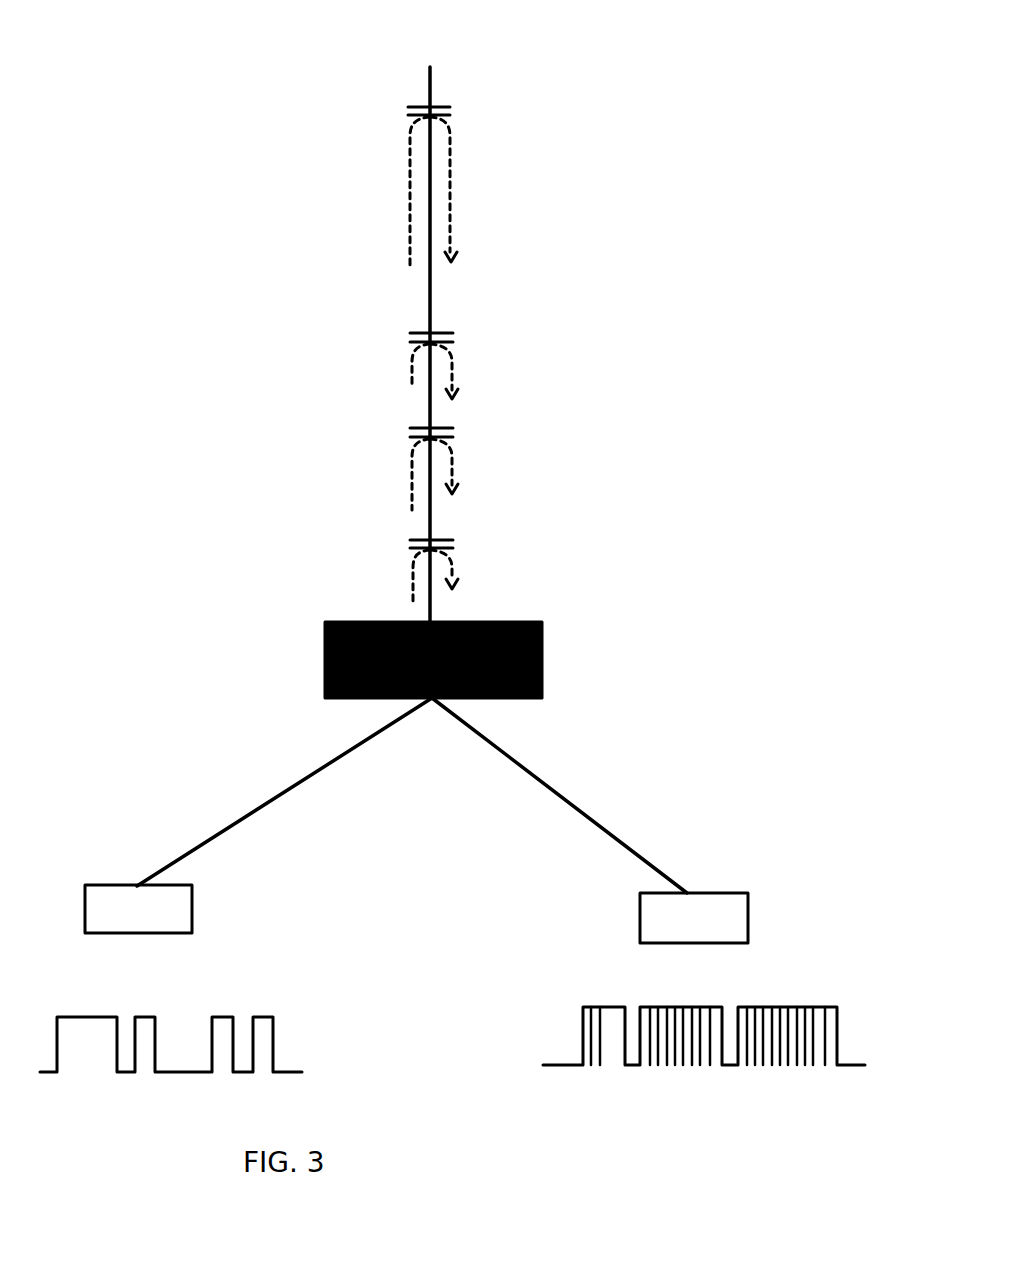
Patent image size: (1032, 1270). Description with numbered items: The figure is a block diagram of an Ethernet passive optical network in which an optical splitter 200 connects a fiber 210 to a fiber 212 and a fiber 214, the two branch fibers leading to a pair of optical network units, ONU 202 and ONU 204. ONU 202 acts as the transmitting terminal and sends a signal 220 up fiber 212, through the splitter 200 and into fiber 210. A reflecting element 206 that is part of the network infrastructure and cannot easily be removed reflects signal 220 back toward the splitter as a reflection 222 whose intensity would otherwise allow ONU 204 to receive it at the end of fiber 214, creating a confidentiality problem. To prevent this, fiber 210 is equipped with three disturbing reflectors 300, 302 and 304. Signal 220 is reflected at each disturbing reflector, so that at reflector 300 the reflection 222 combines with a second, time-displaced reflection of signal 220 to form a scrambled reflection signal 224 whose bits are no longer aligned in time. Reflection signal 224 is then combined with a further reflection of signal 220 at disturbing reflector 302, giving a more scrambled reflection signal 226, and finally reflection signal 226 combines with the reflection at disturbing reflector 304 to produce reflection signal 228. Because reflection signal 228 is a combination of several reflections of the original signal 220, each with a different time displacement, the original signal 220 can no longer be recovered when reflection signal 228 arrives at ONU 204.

The optical splitter 200 is at (325, 658).
The ONU 202 is at (192, 895).
The ONU 204 is at (748, 905).
The reflecting element 206 is at (406, 107).
The fiber 210 is at (427, 286).
The fiber 212 is at (270, 802).
The fiber 214 is at (600, 820).
The signal 220 is at (404, 212).
The reflection 222 is at (450, 145).
The reflection signal 224 is at (452, 360).
The reflection signal 226 is at (452, 455).
The reflection signal 228 is at (456, 578).
The disturbing reflector 300 is at (407, 333).
The disturbing reflector 302 is at (410, 429).
The disturbing reflector 304 is at (410, 541).